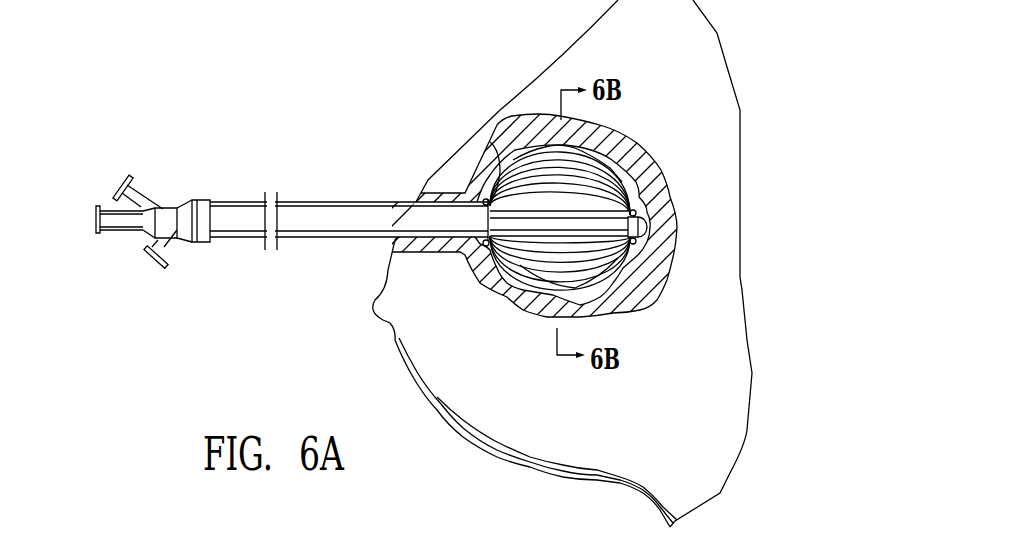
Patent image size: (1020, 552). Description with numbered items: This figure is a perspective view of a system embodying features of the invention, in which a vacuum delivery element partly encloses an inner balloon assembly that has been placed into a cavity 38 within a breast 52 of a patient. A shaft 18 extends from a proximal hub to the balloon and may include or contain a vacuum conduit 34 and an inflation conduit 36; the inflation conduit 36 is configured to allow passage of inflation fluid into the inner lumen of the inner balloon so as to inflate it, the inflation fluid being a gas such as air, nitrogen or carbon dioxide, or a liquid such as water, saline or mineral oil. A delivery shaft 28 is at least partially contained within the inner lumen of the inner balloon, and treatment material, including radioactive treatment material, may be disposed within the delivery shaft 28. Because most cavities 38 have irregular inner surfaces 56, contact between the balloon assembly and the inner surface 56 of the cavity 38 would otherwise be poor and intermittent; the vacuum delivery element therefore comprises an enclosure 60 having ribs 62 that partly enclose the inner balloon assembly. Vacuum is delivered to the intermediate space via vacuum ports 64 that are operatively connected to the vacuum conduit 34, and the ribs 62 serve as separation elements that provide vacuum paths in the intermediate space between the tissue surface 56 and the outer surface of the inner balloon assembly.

The shaft 18 is at (325, 234).
The delivery shaft 28 is at (94, 218).
The vacuum conduit 34 is at (150, 263).
The inflation conduit 36 is at (118, 185).
The cavity 38 is at (630, 152).
The breast 52 is at (532, 445).
The inner surface 56 is at (507, 297).
The enclosure 60 is at (535, 138).
The ribs 62 is at (490, 142).
The vacuum ports 64 is at (467, 185).